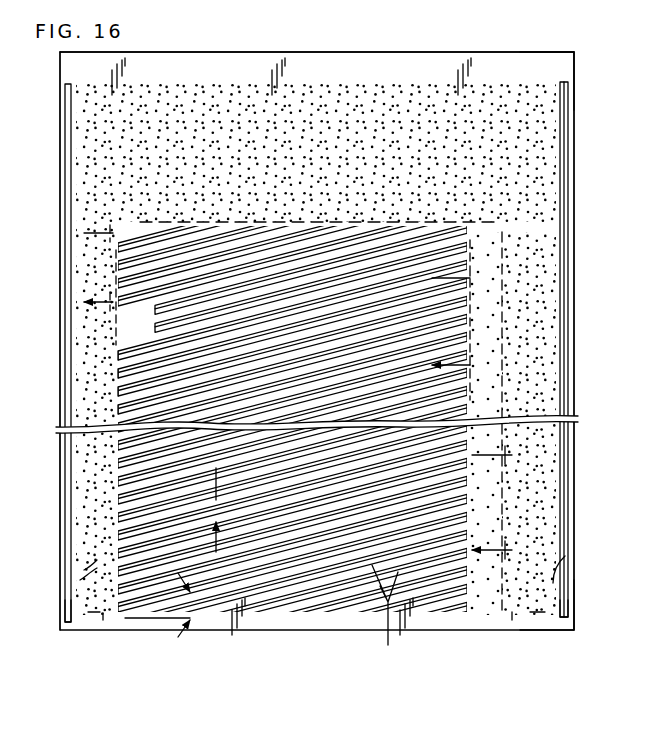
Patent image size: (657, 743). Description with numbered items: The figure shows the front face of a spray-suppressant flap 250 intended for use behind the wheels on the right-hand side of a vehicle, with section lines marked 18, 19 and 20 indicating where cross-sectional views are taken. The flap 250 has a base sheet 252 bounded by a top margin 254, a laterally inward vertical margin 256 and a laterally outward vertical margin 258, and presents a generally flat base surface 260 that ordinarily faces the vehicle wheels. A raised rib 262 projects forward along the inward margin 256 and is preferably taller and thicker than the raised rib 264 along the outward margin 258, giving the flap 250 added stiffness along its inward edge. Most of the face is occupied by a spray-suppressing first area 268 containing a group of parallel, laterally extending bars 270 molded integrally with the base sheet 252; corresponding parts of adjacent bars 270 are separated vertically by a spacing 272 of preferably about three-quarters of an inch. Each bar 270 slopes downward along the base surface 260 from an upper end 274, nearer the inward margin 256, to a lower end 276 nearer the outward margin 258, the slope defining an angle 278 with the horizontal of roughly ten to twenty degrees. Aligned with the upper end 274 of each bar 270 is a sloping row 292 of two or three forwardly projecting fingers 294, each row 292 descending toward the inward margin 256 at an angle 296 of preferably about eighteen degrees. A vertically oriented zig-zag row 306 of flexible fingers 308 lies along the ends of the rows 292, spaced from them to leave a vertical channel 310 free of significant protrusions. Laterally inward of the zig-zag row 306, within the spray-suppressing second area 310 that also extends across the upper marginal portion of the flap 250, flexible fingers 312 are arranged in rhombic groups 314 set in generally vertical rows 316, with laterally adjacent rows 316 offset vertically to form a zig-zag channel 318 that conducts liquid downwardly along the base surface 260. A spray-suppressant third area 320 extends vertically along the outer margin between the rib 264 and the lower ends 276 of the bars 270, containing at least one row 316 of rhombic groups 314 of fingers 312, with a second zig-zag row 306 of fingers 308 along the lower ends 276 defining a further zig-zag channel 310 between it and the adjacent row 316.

The spray-suppressant flap 250 is at (306, 45).
The base sheet 252 is at (556, 70).
The top margin 254 is at (258, 52).
The laterally inward vertical margin 256 is at (575, 137).
The laterally outward vertical margin 258 is at (60, 194).
The base surface 260 is at (485, 233).
The raised rib 262 is at (569, 171).
The raised rib 264 is at (63, 241).
The spray-suppressing first area 268 is at (412, 232).
The bars 270 is at (120, 378).
The spacing 272 is at (205, 516).
The upper end 274 is at (505, 505).
The lower end 276 is at (109, 592).
The angle 278 is at (190, 604).
The row of fingers 292 is at (492, 308).
The fingers 294 is at (578, 338).
The angle 296 is at (390, 616).
The zig-zag row of fingers 306 is at (103, 613).
The flexible fingers 308 is at (97, 576).
The vertical channel 310 is at (97, 617).
The flexible fingers 312 is at (528, 521).
The rhombic groups 314 is at (563, 555).
The rows 316 is at (82, 628).
The zig-zag channel 318 is at (535, 617).
The spray-suppressant third area 320 is at (80, 463).
The section line 18- 18 is at (464, 320).
The section line 19- 19 is at (500, 502).
The section line 20- 20 is at (112, 278).